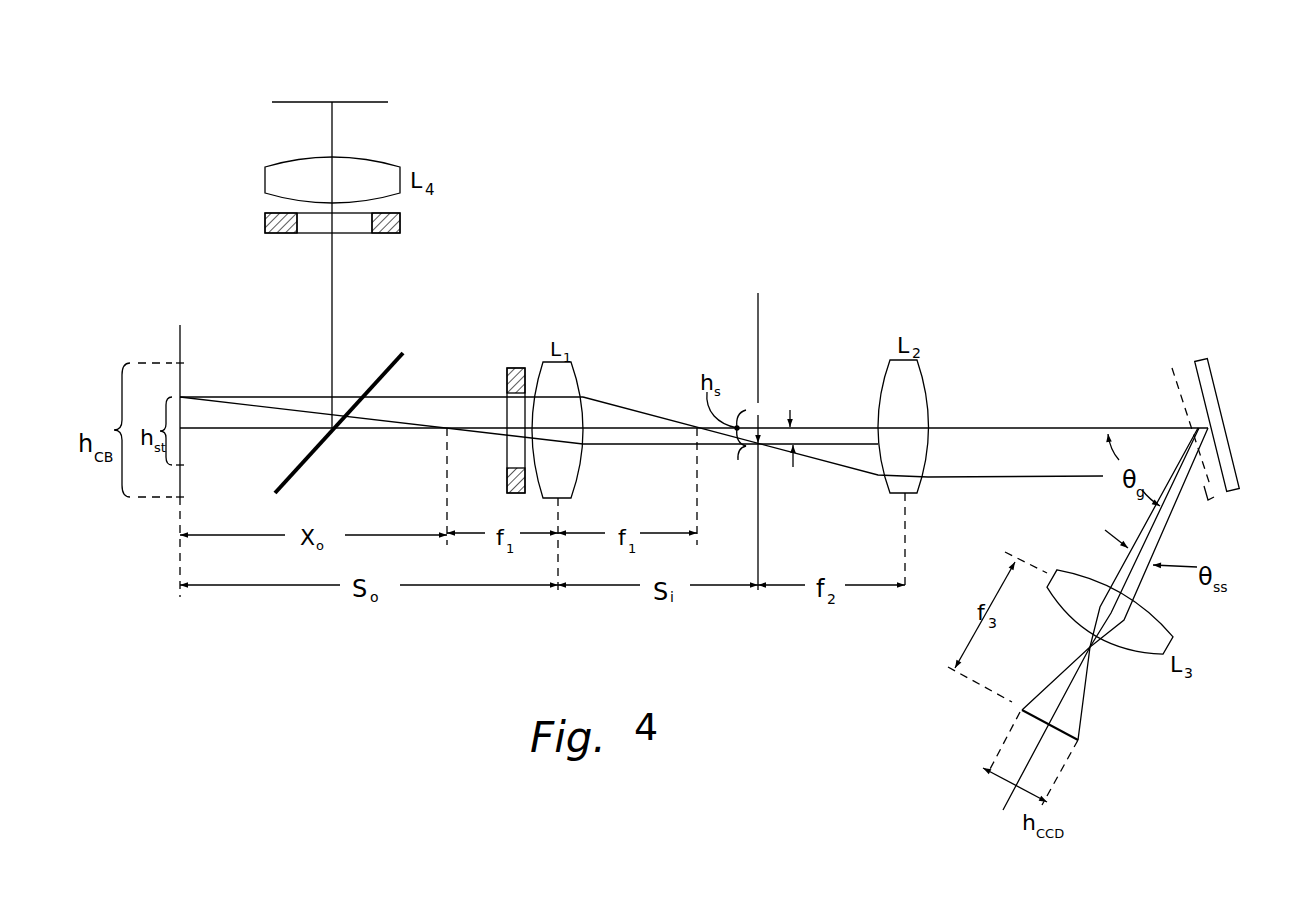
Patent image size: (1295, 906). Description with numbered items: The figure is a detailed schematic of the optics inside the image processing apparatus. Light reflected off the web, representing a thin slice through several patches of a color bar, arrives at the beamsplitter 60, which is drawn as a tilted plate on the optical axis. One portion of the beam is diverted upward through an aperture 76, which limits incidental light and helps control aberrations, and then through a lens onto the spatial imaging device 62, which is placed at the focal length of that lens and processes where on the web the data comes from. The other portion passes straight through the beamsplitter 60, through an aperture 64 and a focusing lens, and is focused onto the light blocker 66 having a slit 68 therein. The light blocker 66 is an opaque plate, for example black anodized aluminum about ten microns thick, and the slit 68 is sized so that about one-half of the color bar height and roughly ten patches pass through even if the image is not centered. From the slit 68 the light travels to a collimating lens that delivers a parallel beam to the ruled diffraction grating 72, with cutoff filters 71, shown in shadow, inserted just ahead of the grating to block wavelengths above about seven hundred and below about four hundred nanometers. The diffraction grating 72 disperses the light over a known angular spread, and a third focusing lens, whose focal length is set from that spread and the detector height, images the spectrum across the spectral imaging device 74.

The beamsplitter 60 is at (388, 356).
The spatial imaging device 62 is at (360, 102).
The aperture 64 is at (505, 393).
The light blocker 66 is at (762, 315).
The slit 68 is at (762, 414).
The cutoff filters 71 is at (1177, 366).
The diffraction grating 72 is at (1215, 375).
The spectral imaging device 74 is at (1067, 733).
The aperture 76 is at (368, 233).